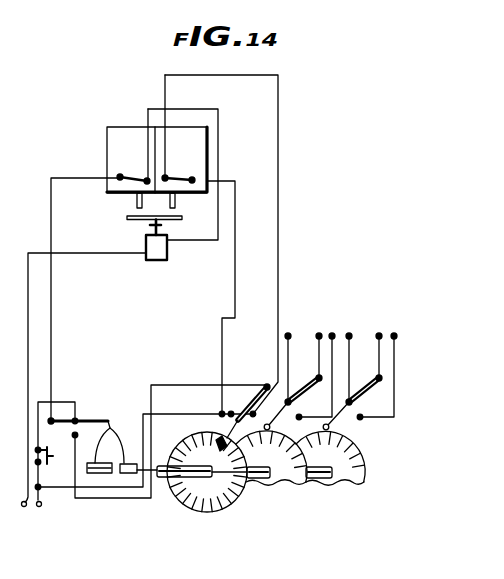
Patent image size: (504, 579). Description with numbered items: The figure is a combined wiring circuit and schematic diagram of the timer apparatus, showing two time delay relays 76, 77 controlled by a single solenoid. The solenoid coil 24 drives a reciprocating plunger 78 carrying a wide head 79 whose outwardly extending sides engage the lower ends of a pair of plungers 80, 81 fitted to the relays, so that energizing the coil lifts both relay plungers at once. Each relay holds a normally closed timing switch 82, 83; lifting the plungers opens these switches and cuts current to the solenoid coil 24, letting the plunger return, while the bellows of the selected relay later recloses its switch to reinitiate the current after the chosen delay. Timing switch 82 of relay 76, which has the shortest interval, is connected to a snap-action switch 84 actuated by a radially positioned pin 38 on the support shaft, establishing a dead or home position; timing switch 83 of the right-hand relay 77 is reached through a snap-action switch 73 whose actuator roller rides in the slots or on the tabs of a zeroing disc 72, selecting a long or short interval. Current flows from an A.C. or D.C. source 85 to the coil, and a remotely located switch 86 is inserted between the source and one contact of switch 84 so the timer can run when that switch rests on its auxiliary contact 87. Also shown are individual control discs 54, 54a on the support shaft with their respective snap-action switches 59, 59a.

The time delay relay 76 is at (125, 127).
The time delay relay 77 is at (195, 128).
The normally closed timing switch 82 is at (132, 176).
The normally closed timing switch 83 is at (166, 179).
The plunger 80 is at (133, 200).
The plunger 81 is at (177, 201).
The wide head 79 is at (130, 220).
The reciprocating plunger 78 is at (160, 231).
The solenoid coil 24 is at (167, 253).
The auxiliary contact 87 is at (80, 406).
The snap-action switch 84 is at (93, 420).
The radially positioned pin 38 is at (113, 425).
The remotely located switch 86 is at (47, 458).
The current source 85 is at (32, 507).
The zeroing disc 72 is at (185, 504).
The snap-action switch 73 is at (244, 405).
The snap-action switch 59 is at (296, 390).
The snap-action switch 59a is at (364, 382).
The control disc 54 is at (285, 478).
The control disc 54a is at (345, 477).